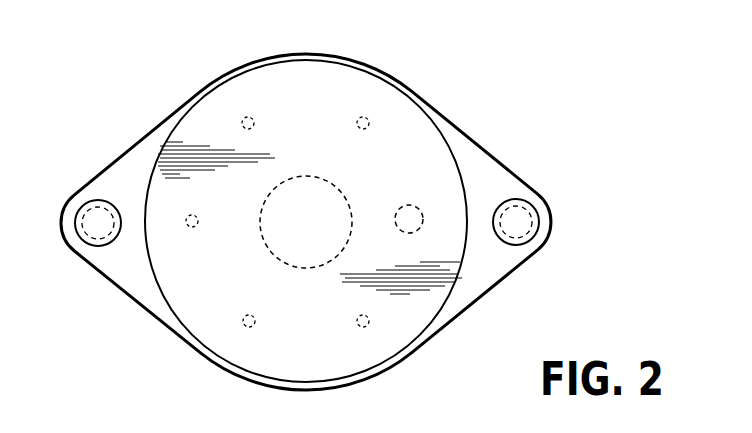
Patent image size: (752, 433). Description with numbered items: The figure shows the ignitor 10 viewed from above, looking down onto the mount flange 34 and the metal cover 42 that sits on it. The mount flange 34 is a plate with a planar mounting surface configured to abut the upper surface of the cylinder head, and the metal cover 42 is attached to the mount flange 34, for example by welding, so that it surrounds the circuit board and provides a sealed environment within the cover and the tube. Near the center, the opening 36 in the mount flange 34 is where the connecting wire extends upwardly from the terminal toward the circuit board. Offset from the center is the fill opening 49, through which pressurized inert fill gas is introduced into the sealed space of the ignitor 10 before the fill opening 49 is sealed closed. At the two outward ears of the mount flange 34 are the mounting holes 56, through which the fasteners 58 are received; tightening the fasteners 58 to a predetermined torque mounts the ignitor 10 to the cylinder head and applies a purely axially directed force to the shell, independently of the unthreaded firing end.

The ignitor 10 is at (514, 81).
The mount flange 34 is at (127, 167).
The metal cover 42 is at (358, 87).
The opening 36 is at (298, 185).
The fill opening 49 is at (410, 234).
The mounting holes 56 is at (60, 224).
The fasteners 58 is at (98, 199).